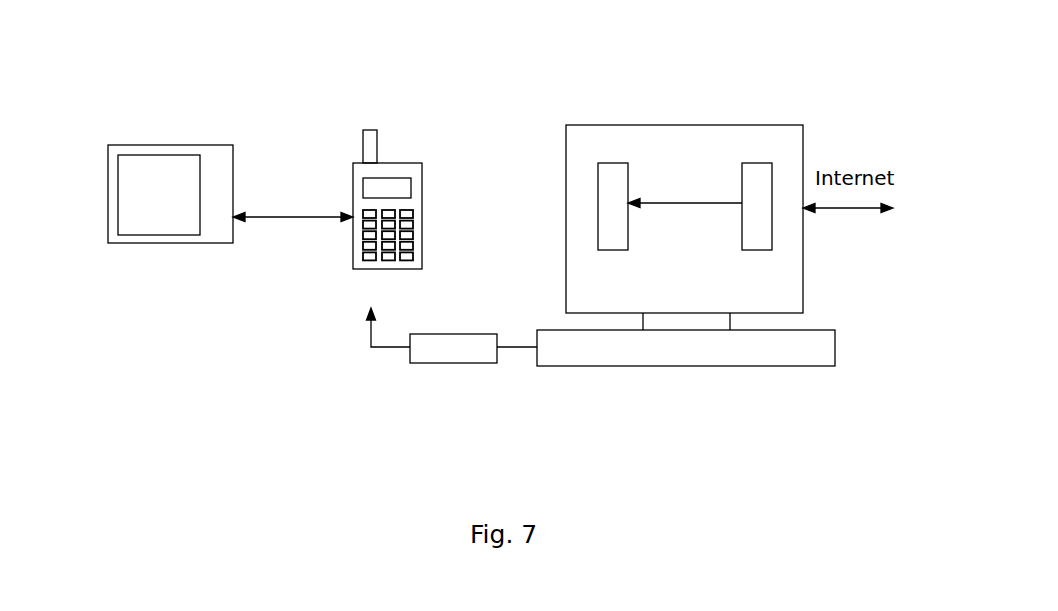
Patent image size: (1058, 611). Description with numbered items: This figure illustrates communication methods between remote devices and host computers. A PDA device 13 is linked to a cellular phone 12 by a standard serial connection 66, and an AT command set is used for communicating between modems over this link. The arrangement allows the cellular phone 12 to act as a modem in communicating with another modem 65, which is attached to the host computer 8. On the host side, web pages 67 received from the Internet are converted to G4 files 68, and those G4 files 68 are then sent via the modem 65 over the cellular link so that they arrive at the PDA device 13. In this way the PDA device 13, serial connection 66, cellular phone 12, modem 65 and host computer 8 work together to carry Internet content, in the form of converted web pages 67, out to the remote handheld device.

The PDA device 13 is at (136, 230).
The standard serial connection 66 is at (282, 249).
The cellular phone 12 is at (426, 166).
The G4 files 68 is at (661, 151).
The web pages 67 is at (809, 151).
The host computer 8 is at (686, 379).
The modem 65 is at (452, 365).